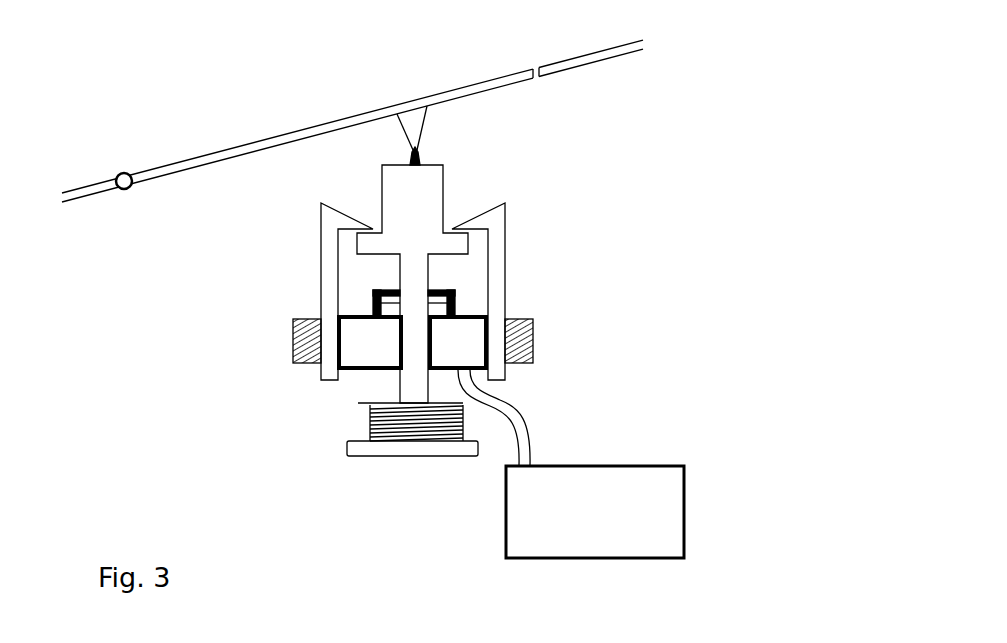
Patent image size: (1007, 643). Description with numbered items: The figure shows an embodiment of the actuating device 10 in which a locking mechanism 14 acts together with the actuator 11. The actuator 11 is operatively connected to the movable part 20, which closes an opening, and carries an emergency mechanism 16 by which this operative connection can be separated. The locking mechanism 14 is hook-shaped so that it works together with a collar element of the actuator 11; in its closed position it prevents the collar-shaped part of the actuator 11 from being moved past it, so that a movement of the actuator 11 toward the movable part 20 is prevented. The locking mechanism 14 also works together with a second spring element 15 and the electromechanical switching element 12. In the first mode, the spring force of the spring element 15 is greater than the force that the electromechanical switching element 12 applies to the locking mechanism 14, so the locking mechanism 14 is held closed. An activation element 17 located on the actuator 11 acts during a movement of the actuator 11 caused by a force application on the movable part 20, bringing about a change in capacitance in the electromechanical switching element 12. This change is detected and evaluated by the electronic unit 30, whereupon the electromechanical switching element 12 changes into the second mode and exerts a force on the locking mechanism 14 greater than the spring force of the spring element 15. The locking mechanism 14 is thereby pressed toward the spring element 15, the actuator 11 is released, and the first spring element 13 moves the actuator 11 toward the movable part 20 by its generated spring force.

The actuating device 10 is at (539, 152).
The actuator 11 is at (375, 213).
The electromechanical switching element 12 is at (357, 343).
The first spring element 13 is at (370, 427).
The locking mechanism 14 is at (320, 232).
The second spring element 15 is at (294, 323).
The emergency mechanism 16 is at (423, 155).
The activation element 17 is at (454, 310).
The movable part 20 is at (363, 114).
The electronic unit 30 is at (574, 527).